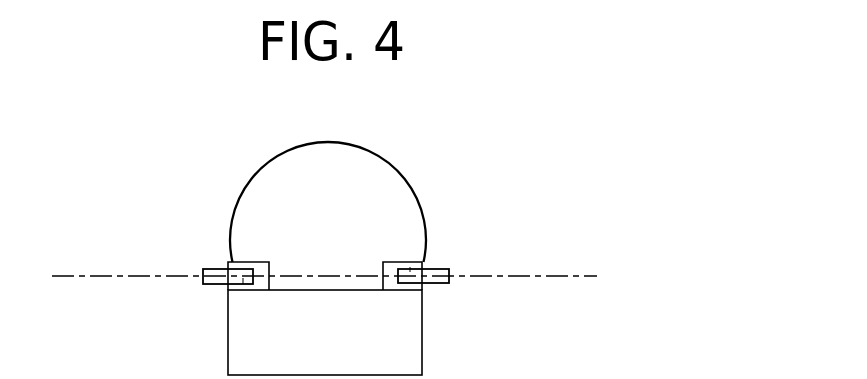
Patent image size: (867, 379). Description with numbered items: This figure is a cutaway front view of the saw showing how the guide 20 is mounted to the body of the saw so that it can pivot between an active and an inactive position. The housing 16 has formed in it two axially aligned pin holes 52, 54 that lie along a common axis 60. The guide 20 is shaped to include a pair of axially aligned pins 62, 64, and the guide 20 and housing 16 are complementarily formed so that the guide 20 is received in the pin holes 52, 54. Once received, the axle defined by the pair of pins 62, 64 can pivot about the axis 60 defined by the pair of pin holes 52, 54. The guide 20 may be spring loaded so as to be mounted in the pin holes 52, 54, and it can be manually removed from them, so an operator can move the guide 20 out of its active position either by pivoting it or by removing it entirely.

The housing 16 is at (401, 174).
The guide 20 is at (442, 292).
The pin hole 52 is at (262, 272).
The pin hole 54 is at (425, 267).
The axis 60 is at (548, 276).
The pin 62 is at (243, 284).
The pin 64 is at (410, 267).